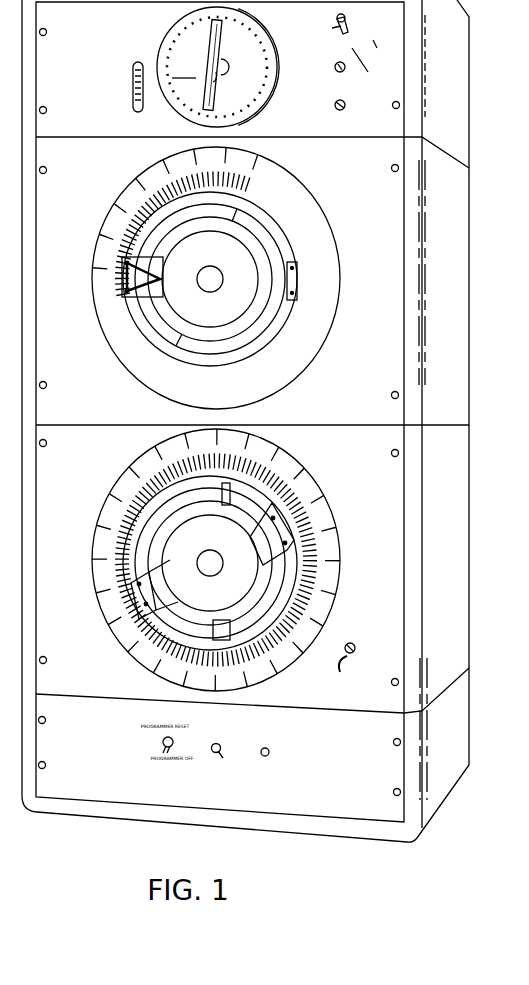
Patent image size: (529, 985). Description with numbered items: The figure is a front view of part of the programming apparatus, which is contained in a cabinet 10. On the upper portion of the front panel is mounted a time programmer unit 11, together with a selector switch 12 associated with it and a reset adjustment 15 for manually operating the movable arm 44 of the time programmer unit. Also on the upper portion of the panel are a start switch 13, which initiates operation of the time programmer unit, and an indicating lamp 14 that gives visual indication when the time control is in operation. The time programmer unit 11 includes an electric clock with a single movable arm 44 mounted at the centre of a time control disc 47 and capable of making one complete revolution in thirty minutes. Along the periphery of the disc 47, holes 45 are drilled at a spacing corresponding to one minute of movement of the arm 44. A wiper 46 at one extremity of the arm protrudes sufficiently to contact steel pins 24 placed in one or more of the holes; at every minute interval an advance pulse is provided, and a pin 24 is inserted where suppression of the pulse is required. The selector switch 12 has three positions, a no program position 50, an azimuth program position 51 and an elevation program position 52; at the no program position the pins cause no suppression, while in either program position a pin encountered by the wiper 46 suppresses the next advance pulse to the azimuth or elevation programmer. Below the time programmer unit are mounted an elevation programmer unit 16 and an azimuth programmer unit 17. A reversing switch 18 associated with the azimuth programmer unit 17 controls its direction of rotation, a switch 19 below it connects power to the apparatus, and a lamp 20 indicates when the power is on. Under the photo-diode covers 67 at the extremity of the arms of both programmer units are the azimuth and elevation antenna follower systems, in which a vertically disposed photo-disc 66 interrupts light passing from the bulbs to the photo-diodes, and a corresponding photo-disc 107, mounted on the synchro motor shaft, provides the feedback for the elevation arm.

The cabinet 10 is at (460, 282).
The time programmer unit 11 is at (419, 73).
The selector switch 12 is at (348, 22).
The start switch 13 is at (335, 67).
The indicating lamp 14 is at (346, 107).
The reset adjustment 15 is at (133, 87).
The elevation programmer unit 16 is at (404, 285).
The azimuth programmer unit 17 is at (408, 572).
The reversing switch 18 is at (345, 663).
The switch 19 is at (163, 741).
The lamp 20 is at (227, 764).
The steel pins 24 is at (268, 56).
The movable arm 44 is at (222, 75).
The holes 45 is at (168, 41).
The wiper 46 is at (213, 18).
The time control disc 47 is at (183, 67).
The no program position 50 is at (332, 28).
The azimuth program position 51 is at (371, 69).
The elevation program position 52 is at (375, 56).
The photo-disc 66 is at (170, 503).
The photo-diode covers 67 is at (145, 269).
The photo-disc 107 is at (230, 527).